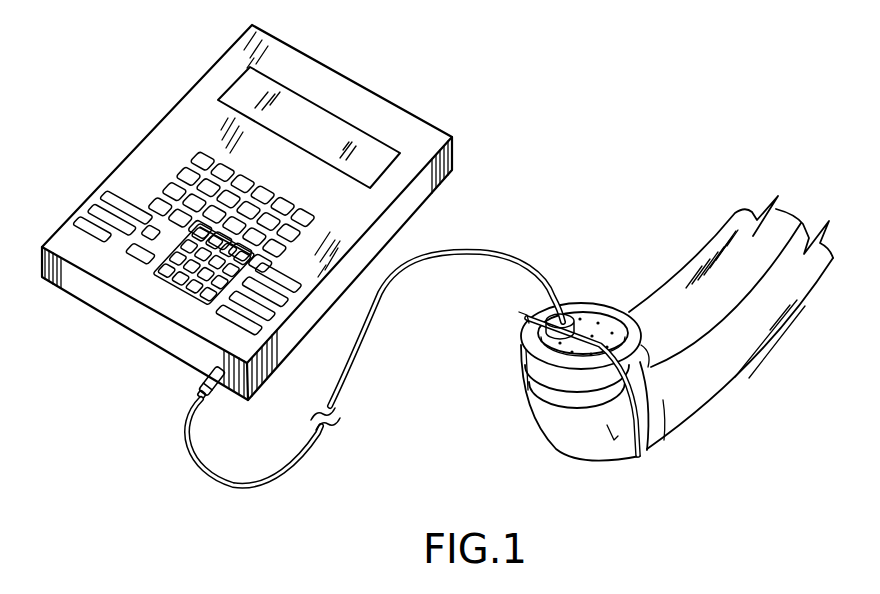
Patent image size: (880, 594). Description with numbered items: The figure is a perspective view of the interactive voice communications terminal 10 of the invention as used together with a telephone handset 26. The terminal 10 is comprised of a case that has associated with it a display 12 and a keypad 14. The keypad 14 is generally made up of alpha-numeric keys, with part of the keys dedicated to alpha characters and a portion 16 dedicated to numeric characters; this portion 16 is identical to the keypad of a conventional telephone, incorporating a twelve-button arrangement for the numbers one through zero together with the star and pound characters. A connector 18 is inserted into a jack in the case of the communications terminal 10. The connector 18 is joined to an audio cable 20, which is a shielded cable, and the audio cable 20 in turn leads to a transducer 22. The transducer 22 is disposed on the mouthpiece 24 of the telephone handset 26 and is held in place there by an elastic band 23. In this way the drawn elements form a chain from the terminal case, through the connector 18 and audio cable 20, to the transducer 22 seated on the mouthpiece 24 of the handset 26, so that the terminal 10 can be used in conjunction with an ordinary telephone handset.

The interactive voice communications terminal 10 is at (388, 100).
The display 12 is at (231, 82).
The keypad 14 is at (176, 183).
The numeric portion 16 is at (150, 272).
The connector 18 is at (200, 385).
The audio cable 20 is at (314, 445).
The transducer 22 is at (550, 308).
The elastic band 23 is at (643, 437).
The mouthpiece 24 is at (602, 302).
The telephone handset 26 is at (808, 300).